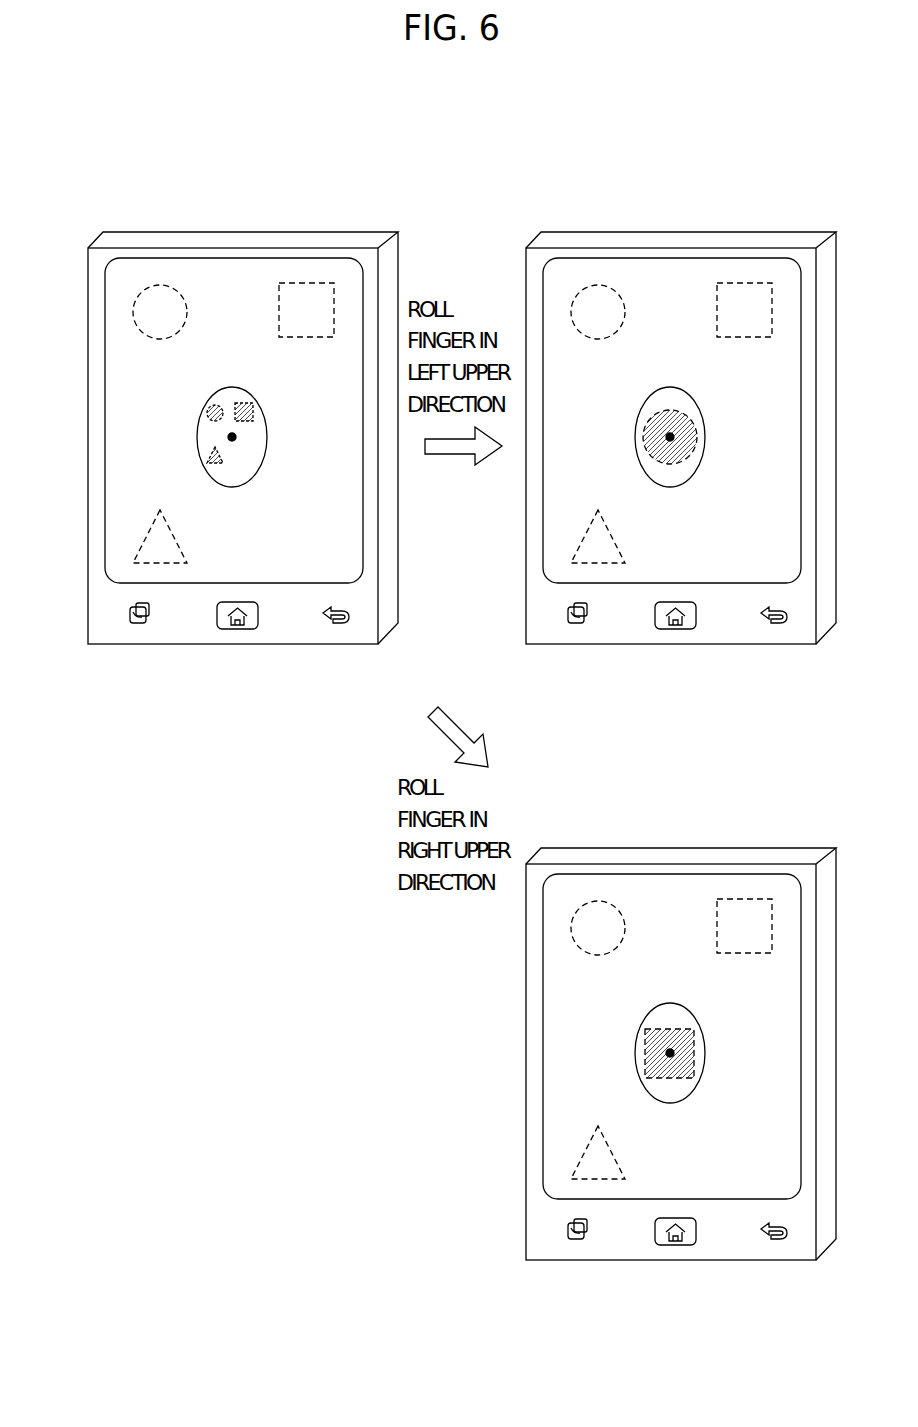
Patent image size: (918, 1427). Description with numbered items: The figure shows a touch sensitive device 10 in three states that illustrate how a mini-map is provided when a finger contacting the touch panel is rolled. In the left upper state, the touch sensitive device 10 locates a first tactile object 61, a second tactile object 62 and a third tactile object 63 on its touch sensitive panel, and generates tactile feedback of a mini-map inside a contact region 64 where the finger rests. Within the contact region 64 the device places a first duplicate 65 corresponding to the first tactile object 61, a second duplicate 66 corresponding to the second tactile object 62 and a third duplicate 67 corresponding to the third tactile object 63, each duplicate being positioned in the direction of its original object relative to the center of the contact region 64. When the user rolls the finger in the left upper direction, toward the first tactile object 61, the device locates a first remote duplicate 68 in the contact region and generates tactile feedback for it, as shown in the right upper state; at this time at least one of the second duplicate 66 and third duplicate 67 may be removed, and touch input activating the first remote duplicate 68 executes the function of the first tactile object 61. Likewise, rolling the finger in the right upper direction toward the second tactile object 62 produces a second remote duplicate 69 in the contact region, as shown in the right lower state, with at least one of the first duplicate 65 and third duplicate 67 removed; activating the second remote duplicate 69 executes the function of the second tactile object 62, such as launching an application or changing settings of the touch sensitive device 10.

The touch sensitive device 10 is at (269, 245).
The first tactile object 61 is at (162, 295).
The second tactile object 62 is at (306, 293).
The third tactile object 63 is at (150, 542).
The contact region 64 is at (265, 437).
The first duplicate 65 is at (208, 413).
The second duplicate 66 is at (253, 407).
The third duplicate 67 is at (208, 462).
The first remote duplicate 68 is at (663, 415).
The second remote duplicate 69 is at (668, 1029).